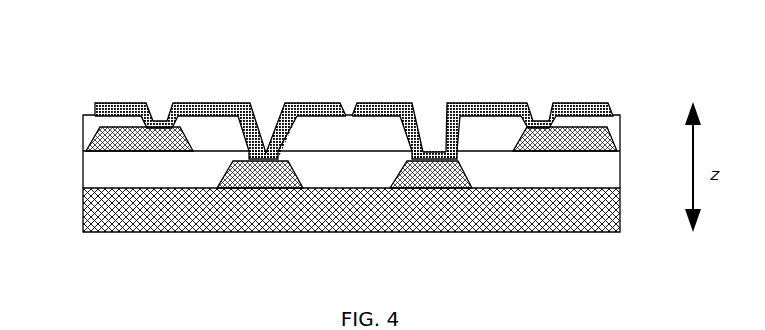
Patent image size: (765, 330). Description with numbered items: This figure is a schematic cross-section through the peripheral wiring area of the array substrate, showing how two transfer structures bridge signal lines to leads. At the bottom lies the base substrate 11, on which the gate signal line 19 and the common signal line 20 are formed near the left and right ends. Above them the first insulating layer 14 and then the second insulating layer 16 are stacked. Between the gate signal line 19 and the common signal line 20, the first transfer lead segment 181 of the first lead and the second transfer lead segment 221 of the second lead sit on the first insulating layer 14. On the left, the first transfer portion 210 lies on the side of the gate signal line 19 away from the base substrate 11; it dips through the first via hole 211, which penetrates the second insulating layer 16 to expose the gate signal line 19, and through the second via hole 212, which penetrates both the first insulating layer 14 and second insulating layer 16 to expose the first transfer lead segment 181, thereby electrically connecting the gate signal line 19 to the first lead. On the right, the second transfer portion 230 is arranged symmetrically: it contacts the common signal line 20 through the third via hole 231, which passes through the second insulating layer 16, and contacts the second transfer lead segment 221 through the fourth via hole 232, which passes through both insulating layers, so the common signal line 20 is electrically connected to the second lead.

The base substrate 11 is at (83, 209).
The first insulating layer 14 is at (83, 173).
The second insulating layer 16 is at (83, 136).
The gate signal line 19 is at (152, 137).
The common signal line 20 is at (552, 140).
The first transfer lead segment 181 is at (272, 173).
The second transfer lead segment 221 is at (438, 173).
The first transfer portion 210 is at (218, 103).
The first via hole 211 is at (184, 126).
The second via hole 212 is at (294, 159).
The second transfer portion 230 is at (497, 103).
The third via hole 231 is at (574, 123).
The fourth via hole 232 is at (466, 159).